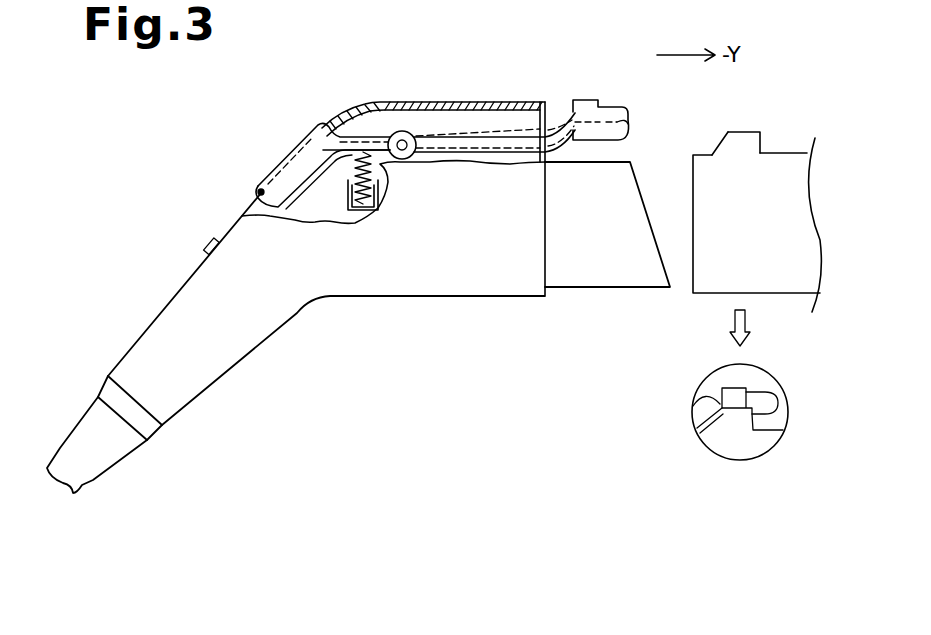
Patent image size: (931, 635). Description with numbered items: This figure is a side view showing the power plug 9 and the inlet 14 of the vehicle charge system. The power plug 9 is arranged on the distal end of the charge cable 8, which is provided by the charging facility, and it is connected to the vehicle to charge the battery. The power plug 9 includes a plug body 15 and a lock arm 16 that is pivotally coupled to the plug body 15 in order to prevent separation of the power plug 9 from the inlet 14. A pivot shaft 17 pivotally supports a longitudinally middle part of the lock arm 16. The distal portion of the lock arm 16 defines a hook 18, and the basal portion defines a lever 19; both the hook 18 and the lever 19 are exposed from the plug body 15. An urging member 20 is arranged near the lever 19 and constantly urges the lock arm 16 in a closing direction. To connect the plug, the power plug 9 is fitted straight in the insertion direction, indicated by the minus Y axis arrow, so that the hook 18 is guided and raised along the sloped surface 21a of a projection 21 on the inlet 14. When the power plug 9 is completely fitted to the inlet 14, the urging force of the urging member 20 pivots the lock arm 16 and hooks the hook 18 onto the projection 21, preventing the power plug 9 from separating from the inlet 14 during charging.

The charge cable 8 is at (52, 462).
The power plug 9 is at (473, 297).
The inlet 14 is at (707, 293).
The plug body 15 is at (380, 287).
The lock arm 16 is at (500, 130).
The pivot shaft 17 is at (402, 142).
The hook 18 is at (628, 124).
The lever 19 is at (280, 153).
The urging member 20 is at (388, 186).
The projection 21 is at (753, 133).
The sloped surface 21a is at (719, 136).